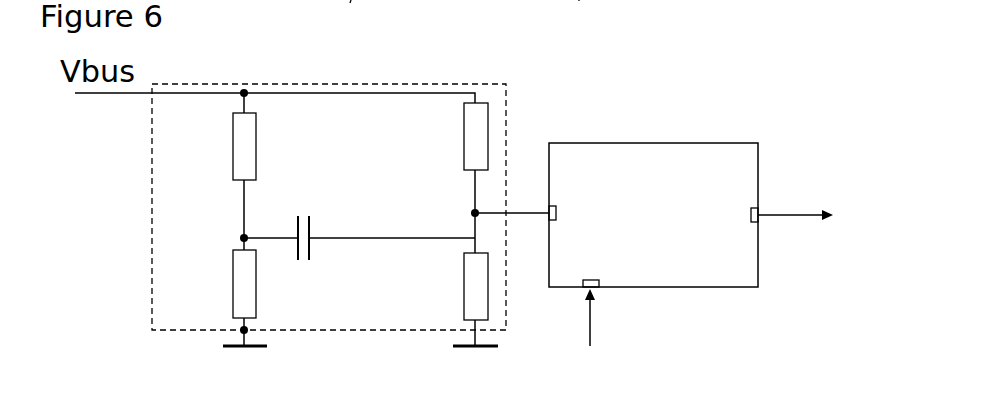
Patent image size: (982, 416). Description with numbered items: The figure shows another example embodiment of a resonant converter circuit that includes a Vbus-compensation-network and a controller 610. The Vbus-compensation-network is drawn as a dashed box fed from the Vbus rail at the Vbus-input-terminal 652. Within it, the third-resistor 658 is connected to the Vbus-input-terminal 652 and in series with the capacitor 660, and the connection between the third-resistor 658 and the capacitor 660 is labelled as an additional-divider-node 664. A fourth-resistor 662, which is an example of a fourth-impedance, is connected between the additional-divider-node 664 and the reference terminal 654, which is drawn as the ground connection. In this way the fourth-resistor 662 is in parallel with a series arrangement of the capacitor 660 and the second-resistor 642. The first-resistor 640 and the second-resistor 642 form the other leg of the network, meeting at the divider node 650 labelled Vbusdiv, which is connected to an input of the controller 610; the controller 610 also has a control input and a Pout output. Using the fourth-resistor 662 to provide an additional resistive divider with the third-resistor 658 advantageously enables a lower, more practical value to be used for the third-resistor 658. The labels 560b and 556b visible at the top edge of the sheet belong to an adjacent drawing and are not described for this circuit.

The controller 610 is at (700, 143).
The first-resistor 640 is at (488, 140).
The second-resistor 642 is at (488, 293).
The divider node 650 is at (477, 211).
The Vbus-input-terminal 652 is at (245, 90).
The reference terminal 654 is at (242, 331).
The third-resistor 658 is at (233, 138).
The capacitor 660 is at (311, 244).
The fourth-resistor 662 is at (233, 266).
The additional-divider-node 664 is at (242, 237).
The label from adjacent figure 560b is at (357, 11).
The label from adjacent figure 556b is at (579, 5).